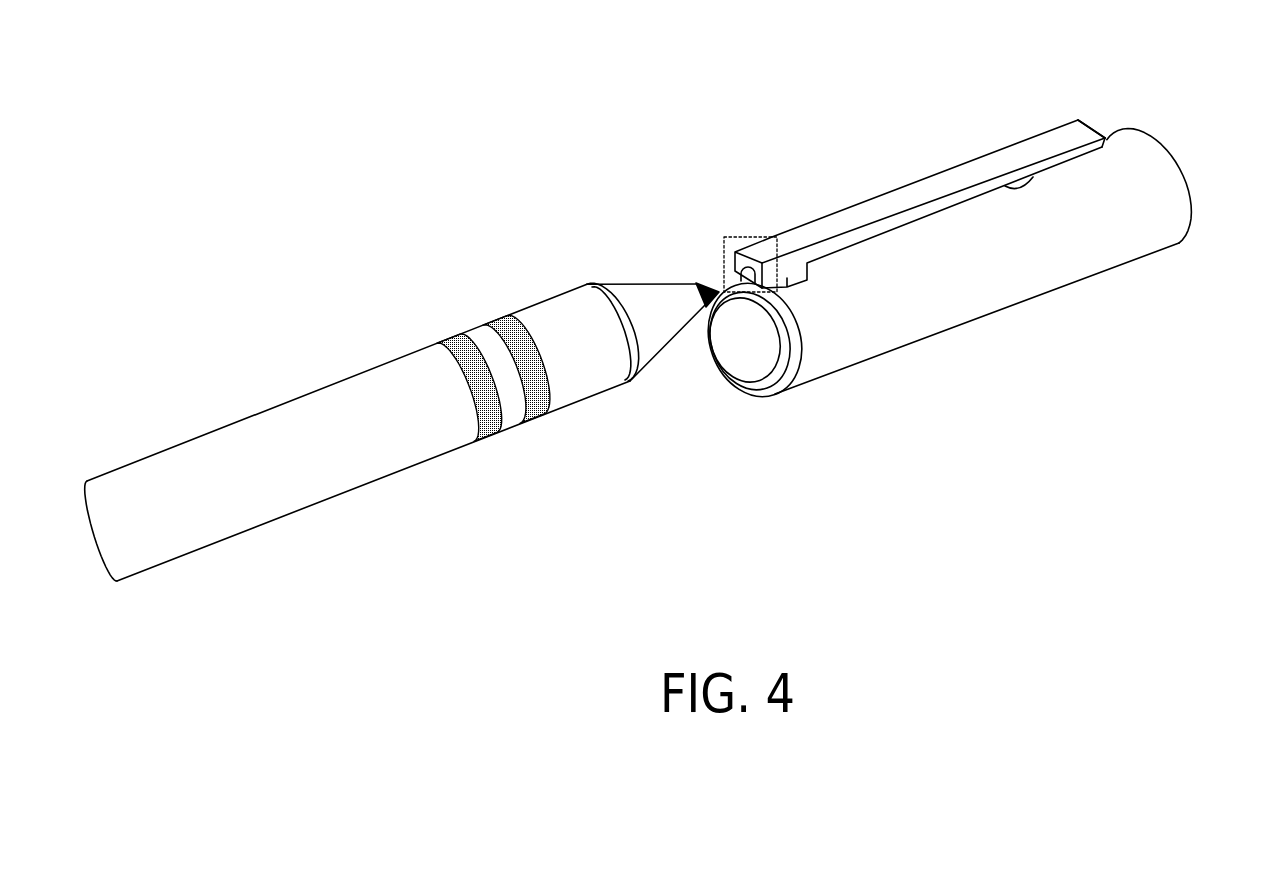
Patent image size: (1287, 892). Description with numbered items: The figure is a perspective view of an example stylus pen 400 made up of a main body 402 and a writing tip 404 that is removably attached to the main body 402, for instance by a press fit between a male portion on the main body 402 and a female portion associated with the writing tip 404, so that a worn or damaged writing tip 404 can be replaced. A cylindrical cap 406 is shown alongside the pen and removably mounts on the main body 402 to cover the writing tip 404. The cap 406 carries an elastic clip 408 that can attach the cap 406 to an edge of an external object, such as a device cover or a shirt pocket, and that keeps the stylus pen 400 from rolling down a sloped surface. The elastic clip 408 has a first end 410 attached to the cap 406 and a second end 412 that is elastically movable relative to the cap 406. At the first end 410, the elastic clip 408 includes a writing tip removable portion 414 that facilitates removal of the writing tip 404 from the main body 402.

The stylus pen 400 is at (677, 305).
The main body 402 is at (591, 398).
The writing tip 404 is at (700, 284).
The cap 406 is at (983, 320).
The elastic clip 408 is at (910, 184).
The first end 410 is at (767, 210).
The second end 412 is at (1062, 100).
The writing tip removable portion 414 is at (724, 237).